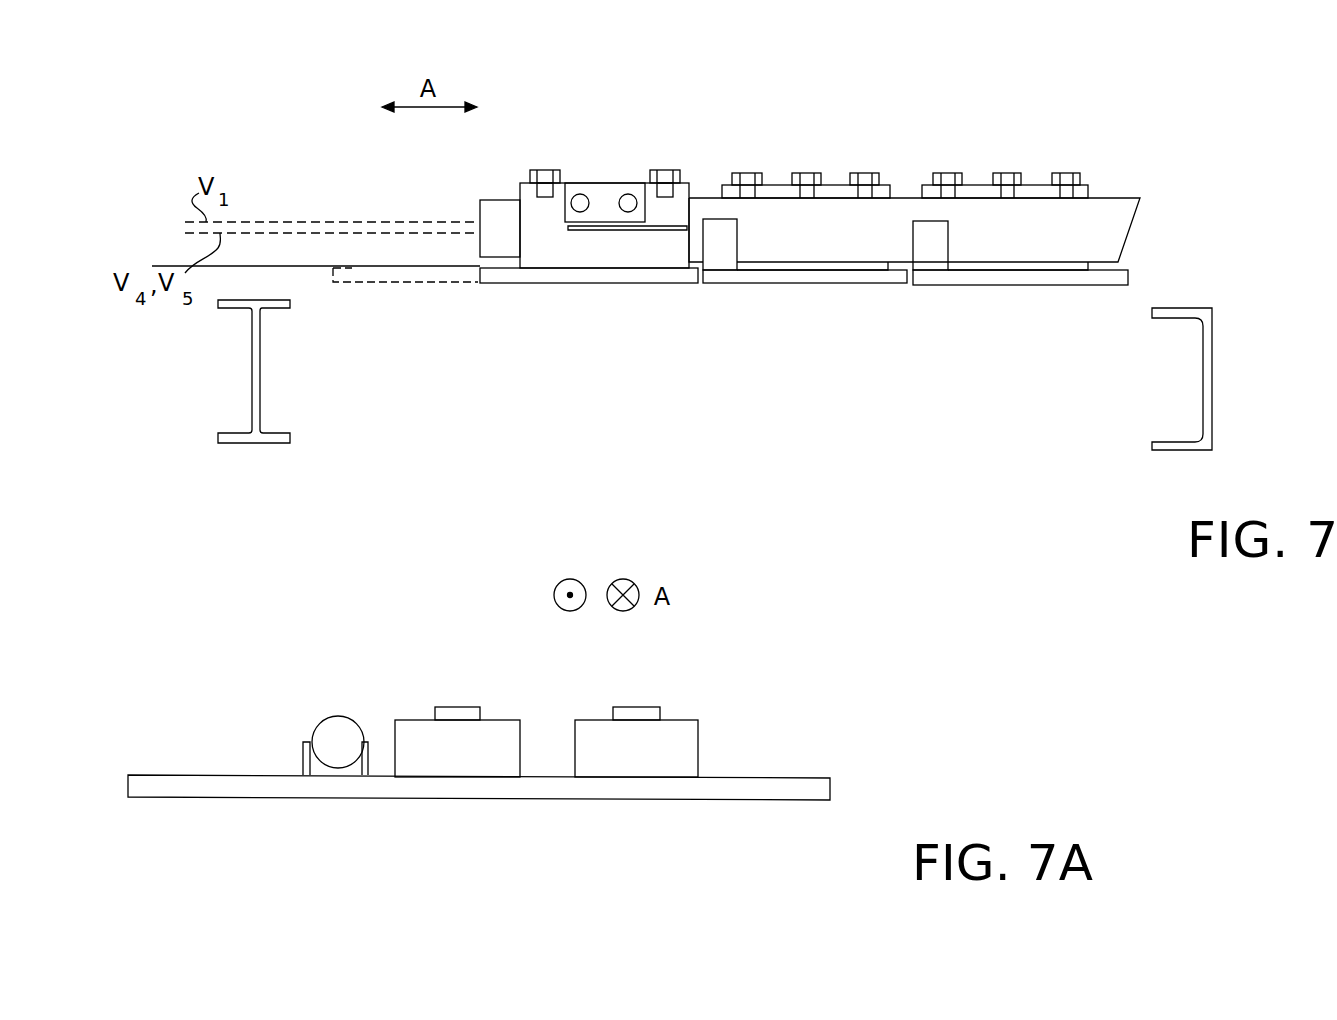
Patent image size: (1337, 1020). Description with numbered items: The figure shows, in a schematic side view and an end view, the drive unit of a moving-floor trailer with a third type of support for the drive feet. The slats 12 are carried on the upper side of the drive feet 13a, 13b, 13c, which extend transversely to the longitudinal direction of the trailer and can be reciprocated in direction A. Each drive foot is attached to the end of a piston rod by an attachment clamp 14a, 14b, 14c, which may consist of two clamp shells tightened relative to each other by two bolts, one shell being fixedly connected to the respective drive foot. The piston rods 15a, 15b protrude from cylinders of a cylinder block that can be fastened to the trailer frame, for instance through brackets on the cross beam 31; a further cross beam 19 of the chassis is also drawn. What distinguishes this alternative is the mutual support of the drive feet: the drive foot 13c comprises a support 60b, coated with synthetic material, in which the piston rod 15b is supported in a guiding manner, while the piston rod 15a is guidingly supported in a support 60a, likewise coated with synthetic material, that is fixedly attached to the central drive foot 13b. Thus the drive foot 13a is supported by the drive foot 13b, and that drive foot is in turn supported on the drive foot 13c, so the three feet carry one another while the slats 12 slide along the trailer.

In FIG. 7, the slats 12 is at (320, 260).
In FIG. 7, the drive foot 13a is at (555, 285).
In FIG. 7, the drive foot 13b is at (833, 277).
In FIG. 7A, the drive foot 13b is at (238, 788).
In FIG. 7, the drive foot 13c is at (1052, 280).
In FIG. 7, the attachment clamp 14a is at (595, 194).
In FIG. 7, the attachment clamp 14b is at (777, 218).
In FIG. 7A, the attachment clamp 14b is at (500, 738).
In FIG. 7, the attachment clamp 14c is at (980, 217).
In FIG. 7A, the attachment clamp 14c is at (683, 745).
In FIG. 7A, the piston rod 15a is at (338, 737).
In FIG. 7, the piston rod 15b is at (1045, 252).
In FIG. 7, the support 60a is at (727, 238).
In FIG. 7A, the support 60a is at (310, 768).
In FIG. 7, the support 60b is at (930, 240).
In FIG. 7, the cross beam 19 is at (257, 388).
In FIG. 7, the cross beam 31 is at (1206, 383).